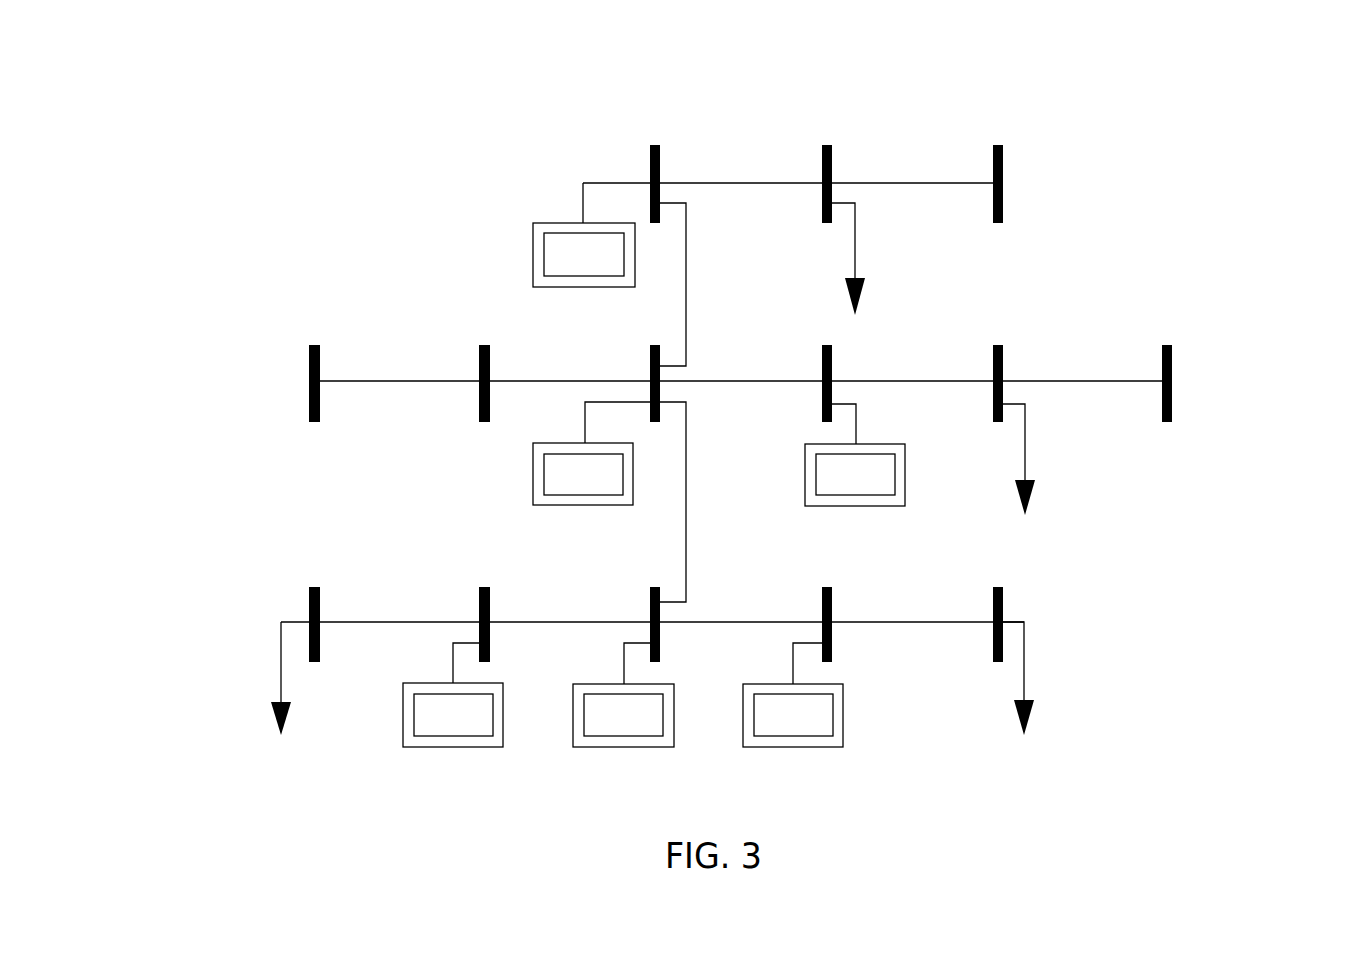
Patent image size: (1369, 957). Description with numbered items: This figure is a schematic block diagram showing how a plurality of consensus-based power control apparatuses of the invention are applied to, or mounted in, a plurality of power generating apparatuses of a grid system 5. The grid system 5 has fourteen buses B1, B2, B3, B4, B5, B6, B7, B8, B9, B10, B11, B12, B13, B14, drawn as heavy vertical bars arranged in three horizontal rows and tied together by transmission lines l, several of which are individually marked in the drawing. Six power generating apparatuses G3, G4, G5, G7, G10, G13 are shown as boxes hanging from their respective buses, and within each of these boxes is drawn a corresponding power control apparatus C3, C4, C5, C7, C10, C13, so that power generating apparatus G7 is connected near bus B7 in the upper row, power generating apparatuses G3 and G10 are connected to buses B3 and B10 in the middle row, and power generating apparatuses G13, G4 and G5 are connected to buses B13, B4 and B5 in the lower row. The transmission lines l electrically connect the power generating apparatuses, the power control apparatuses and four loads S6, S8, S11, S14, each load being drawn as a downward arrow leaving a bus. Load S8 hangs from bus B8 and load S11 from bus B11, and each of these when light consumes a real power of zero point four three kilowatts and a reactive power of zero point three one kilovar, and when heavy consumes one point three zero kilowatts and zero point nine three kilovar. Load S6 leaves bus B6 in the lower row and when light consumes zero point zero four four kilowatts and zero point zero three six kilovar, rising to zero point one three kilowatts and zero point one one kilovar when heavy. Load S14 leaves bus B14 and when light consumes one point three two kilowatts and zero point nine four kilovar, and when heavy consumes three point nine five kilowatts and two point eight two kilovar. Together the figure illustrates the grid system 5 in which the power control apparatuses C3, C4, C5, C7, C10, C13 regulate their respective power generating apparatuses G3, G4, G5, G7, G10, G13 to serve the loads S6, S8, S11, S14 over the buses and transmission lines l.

The grid system 5 is at (333, 135).
The bus B1 is at (309, 370).
The bus B2 is at (479, 370).
The bus B3 is at (650, 370).
The bus B4 is at (650, 612).
The bus B5 is at (822, 612).
The bus B6 is at (993, 612).
The bus B7 is at (650, 165).
The bus B8 is at (822, 165).
The bus B9 is at (993, 165).
The bus B10 is at (822, 370).
The bus B11 is at (993, 370).
The bus B12 is at (1162, 370).
The bus B13 is at (479, 612).
The bus B14 is at (309, 612).
The power generating apparatus G3 is at (562, 443).
The power generating apparatus G4 is at (604, 684).
The power generating apparatus G5 is at (773, 684).
The power generating apparatus G7 is at (560, 223).
The power generating apparatus G10 is at (833, 444).
The power generating apparatus G13 is at (432, 683).
The power control apparatus C3 is at (544, 473).
The power control apparatus C4 is at (584, 715).
The power control apparatus C5 is at (754, 715).
The power control apparatus C7 is at (544, 258).
The power control apparatus C10 is at (816, 475).
The power control apparatus C13 is at (414, 713).
The load S6 is at (1164, 683).
The load S8 is at (964, 259).
The load S11 is at (1157, 460).
The load S14 is at (235, 707).
The transmission line l is at (610, 183).